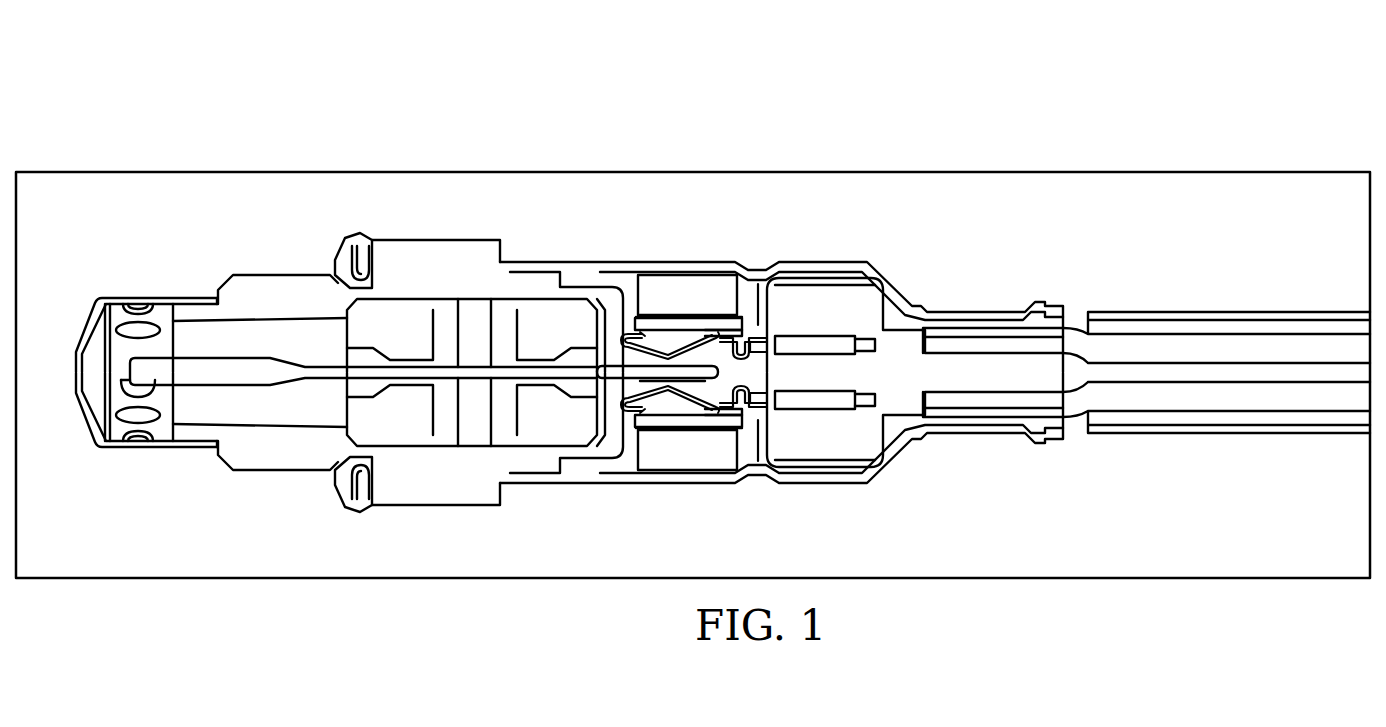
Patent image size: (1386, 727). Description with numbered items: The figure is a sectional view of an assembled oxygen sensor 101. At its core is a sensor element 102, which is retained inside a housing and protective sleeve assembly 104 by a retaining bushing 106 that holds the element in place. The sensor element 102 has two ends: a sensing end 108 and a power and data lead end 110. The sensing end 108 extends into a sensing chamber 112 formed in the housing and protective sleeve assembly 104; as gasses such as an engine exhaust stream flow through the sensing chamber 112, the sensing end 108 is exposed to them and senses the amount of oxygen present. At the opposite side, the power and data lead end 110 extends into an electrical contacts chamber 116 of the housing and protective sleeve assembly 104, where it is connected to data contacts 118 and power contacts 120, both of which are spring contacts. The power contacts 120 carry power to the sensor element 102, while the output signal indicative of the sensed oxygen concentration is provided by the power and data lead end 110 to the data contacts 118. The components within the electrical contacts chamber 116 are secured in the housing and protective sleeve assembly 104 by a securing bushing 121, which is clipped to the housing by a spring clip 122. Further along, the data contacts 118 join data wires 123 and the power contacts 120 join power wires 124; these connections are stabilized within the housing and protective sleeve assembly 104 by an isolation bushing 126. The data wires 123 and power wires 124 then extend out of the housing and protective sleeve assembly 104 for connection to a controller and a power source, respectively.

The oxygen sensor 101 is at (122, 60).
The sensor element 102 is at (365, 392).
The housing and protective sleeve assembly 104 is at (100, 300).
The retaining bushing 106 is at (355, 330).
The sensing end 108 is at (160, 372).
The power and data lead end 110 is at (705, 372).
The sensing chamber 112 is at (186, 274).
The electrical contacts chamber 116 is at (758, 257).
The data contacts 118 is at (680, 352).
The power contacts 120 is at (683, 392).
The securing bushing 121 is at (643, 453).
The spring clip 122 is at (747, 447).
The data wires 123 is at (842, 340).
The power wires 124 is at (815, 403).
The isolation bushing 126 is at (877, 455).